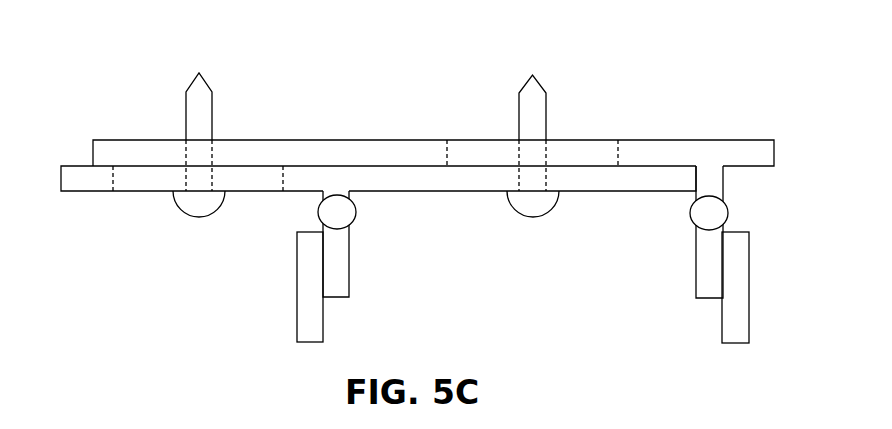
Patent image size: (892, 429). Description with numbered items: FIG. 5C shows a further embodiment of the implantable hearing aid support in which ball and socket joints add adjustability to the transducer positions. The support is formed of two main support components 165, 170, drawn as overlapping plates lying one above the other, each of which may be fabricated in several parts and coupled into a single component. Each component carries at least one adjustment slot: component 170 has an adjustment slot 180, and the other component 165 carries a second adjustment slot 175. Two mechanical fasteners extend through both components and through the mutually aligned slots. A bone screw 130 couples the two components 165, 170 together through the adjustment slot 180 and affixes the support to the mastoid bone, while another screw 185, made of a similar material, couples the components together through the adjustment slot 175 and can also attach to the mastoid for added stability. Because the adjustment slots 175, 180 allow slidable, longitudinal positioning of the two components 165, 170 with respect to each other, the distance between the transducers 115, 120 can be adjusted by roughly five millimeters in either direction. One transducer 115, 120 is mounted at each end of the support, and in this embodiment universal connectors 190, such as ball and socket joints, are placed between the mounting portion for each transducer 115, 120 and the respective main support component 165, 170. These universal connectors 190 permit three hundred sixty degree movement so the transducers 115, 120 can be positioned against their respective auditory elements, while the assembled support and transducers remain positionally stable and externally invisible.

The transducer 115 is at (297, 307).
The transducer 120 is at (722, 331).
The bone screw 130 is at (519, 102).
The support component 165 is at (417, 192).
The support component 170 is at (670, 140).
The adjustment slot 175 is at (113, 177).
The adjustment slot 180 is at (616, 154).
The screw 185 is at (186, 102).
The universal connector 190 is at (318, 211).